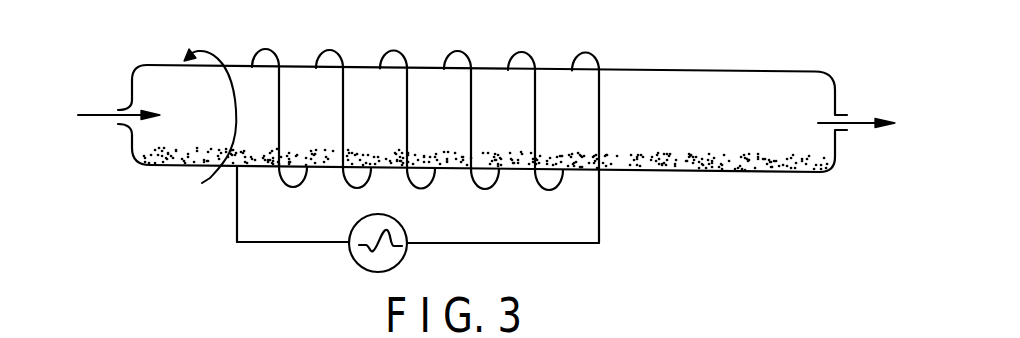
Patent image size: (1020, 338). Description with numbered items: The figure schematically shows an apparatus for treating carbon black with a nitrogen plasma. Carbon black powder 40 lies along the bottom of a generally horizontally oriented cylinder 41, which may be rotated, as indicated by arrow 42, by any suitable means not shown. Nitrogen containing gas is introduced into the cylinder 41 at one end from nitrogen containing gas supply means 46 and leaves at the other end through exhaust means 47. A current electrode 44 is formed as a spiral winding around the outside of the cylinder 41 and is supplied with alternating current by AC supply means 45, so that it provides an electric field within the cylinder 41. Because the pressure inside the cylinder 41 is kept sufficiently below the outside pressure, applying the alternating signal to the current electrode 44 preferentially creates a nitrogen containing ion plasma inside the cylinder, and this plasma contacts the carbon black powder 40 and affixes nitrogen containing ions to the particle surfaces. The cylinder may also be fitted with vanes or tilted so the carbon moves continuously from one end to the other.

The carbon black powder 40 is at (734, 150).
The cylinder 41 is at (826, 168).
The arrow 42 is at (202, 183).
The current electrode 44 is at (295, 187).
The AC supply means 45 is at (408, 220).
The nitrogen containing gas supply means 46 is at (93, 117).
The exhaust means 47 is at (862, 121).